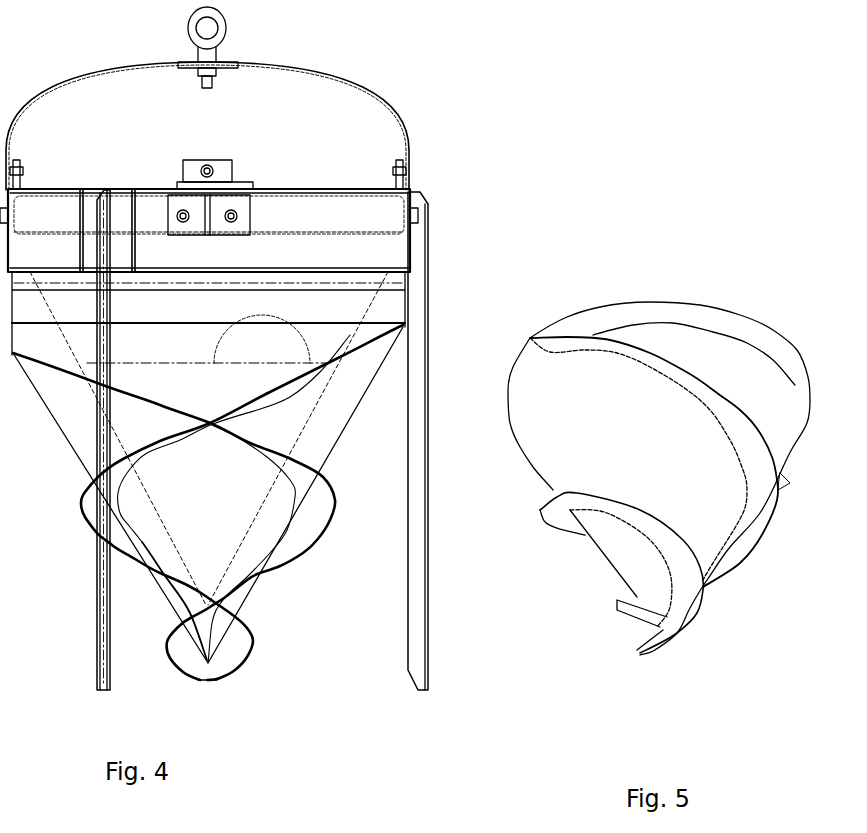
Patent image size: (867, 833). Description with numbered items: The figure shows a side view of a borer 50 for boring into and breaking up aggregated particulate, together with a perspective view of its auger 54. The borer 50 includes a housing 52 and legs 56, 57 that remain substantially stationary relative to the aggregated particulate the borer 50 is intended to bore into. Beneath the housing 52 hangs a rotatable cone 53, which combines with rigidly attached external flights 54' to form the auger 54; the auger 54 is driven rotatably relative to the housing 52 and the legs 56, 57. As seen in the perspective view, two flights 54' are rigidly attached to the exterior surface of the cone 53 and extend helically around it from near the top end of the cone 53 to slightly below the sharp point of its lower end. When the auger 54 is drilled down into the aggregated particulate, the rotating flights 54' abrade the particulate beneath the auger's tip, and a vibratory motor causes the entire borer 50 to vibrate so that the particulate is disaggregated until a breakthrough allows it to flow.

In FIG. 4, the borer 50 is at (366, 72).
In FIG. 4, the housing 52 is at (80, 101).
In FIG. 4, the rotatable cone 53 is at (217, 522).
In FIG. 5, the auger 54 is at (659, 431).
In FIG. 4, the flights 54' is at (208, 502).
In FIG. 5, the flights 54' is at (605, 572).
In FIG. 4, the leg 56 is at (96, 652).
In FIG. 4, the leg 57 is at (417, 673).